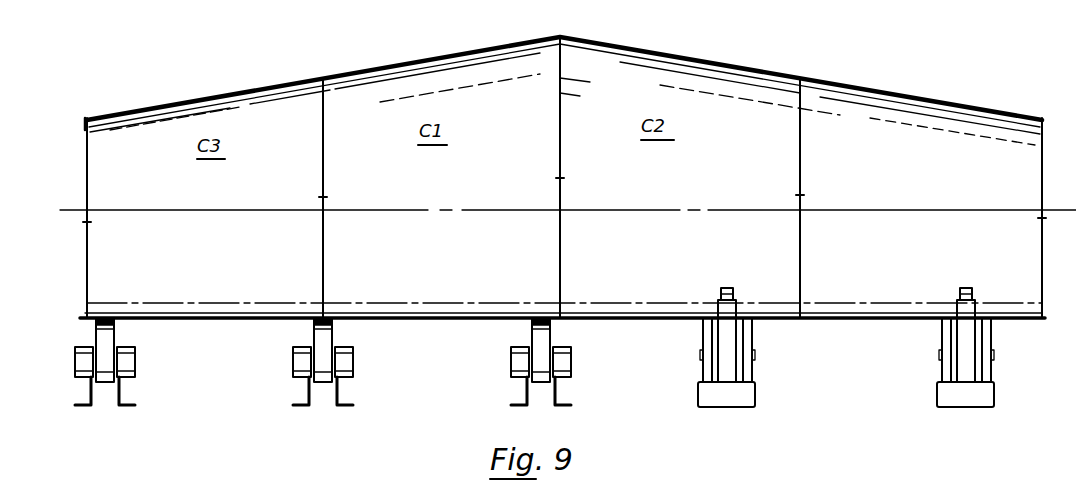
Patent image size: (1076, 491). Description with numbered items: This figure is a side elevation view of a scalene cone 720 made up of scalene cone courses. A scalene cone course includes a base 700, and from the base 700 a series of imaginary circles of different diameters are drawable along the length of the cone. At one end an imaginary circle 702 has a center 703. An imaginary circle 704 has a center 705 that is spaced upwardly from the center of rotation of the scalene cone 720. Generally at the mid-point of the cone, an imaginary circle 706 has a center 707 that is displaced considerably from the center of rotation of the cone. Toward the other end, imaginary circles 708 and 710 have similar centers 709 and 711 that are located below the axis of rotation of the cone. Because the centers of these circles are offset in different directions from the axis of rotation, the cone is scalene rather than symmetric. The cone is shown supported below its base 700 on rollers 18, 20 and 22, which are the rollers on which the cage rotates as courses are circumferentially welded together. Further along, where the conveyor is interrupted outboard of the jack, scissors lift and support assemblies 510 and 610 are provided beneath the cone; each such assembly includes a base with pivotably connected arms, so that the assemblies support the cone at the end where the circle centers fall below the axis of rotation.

The base 700 is at (481, 320).
The imaginary circle 702 is at (87, 178).
The center 703 is at (87, 222).
The imaginary circle 704 is at (323, 255).
The center 705 is at (323, 197).
The imaginary circle 706 is at (560, 238).
The center 707 is at (560, 178).
The imaginary circle 708 is at (800, 237).
The center 709 is at (800, 195).
The imaginary circle 710 is at (1042, 176).
The center 711 is at (1042, 218).
The scalene cone 720 is at (432, 210).
The roller 18 is at (114, 335).
The roller 20 is at (332, 333).
The roller 22 is at (550, 337).
The scissors lift and support assembly 510 is at (755, 348).
The scissors lift and support assembly 610 is at (994, 348).